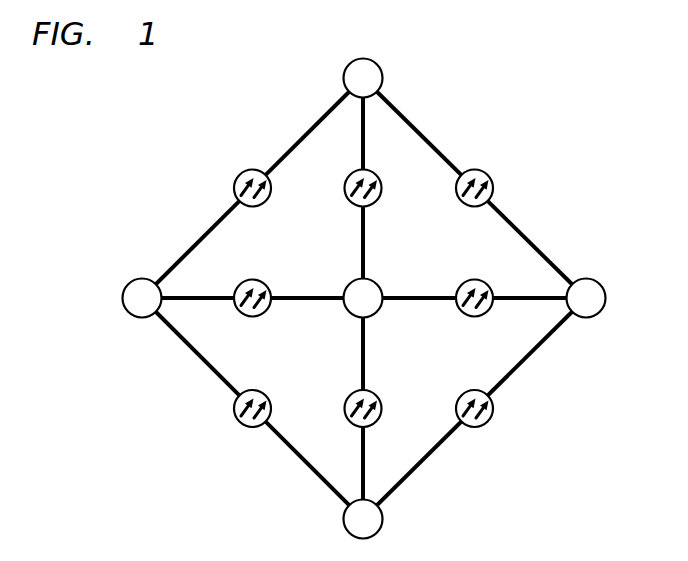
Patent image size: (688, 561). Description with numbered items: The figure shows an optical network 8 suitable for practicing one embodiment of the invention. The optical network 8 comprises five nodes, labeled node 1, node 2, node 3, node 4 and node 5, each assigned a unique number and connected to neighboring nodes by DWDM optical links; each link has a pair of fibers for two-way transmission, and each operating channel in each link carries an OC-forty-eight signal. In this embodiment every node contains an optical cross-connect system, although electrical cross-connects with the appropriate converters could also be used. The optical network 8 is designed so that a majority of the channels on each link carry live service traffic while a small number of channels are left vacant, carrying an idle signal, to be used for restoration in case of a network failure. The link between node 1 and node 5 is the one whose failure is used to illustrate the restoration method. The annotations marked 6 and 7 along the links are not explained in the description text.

The node 1 is at (142, 298).
The node 2 is at (363, 78).
The node 3 is at (363, 298).
The node 4 is at (586, 298).
The node 5 is at (363, 519).
The working link 6 is at (213, 296).
The spare link 7 is at (195, 243).
The optical network 8 is at (503, 74).